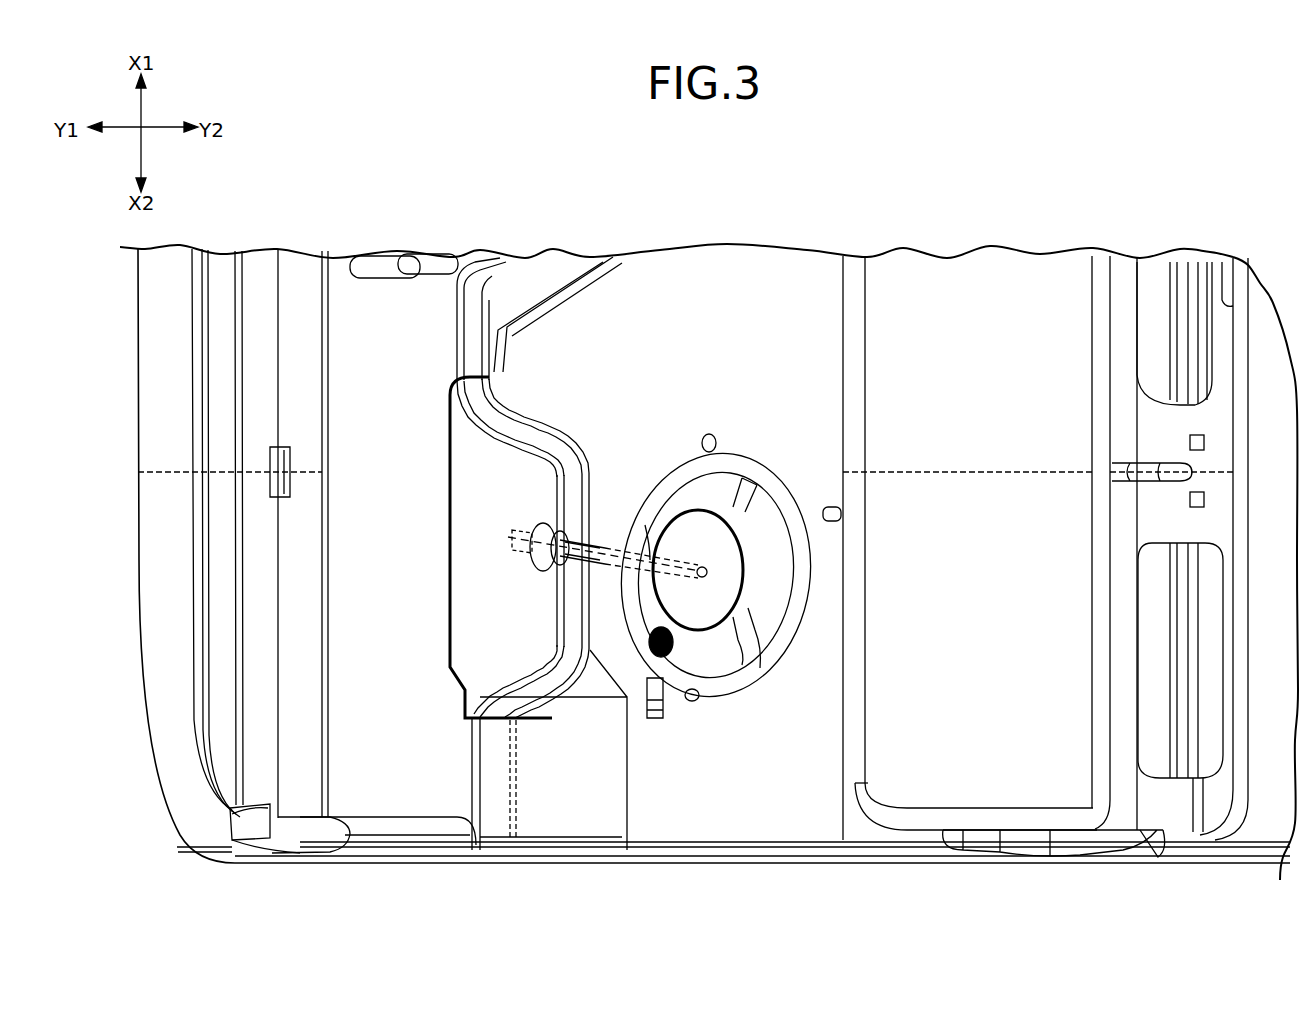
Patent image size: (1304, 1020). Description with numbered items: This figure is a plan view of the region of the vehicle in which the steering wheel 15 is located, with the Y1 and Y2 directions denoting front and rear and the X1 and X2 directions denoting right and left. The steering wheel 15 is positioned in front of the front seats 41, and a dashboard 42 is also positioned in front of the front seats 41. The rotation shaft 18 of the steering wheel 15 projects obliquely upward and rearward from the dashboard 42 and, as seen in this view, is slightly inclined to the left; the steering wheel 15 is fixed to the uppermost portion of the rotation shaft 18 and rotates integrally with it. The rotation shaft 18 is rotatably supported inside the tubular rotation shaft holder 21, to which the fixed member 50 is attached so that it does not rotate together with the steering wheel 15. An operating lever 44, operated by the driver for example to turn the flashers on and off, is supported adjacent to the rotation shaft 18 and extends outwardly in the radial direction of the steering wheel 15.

The steering wheel 15 is at (752, 470).
The rotation shaft 18 is at (604, 545).
The rotation shaft holder 21 is at (612, 570).
The front seats 41 is at (923, 835).
The dashboard 42 is at (447, 343).
The operating lever 44 is at (656, 718).
The fixed member 50 is at (740, 512).